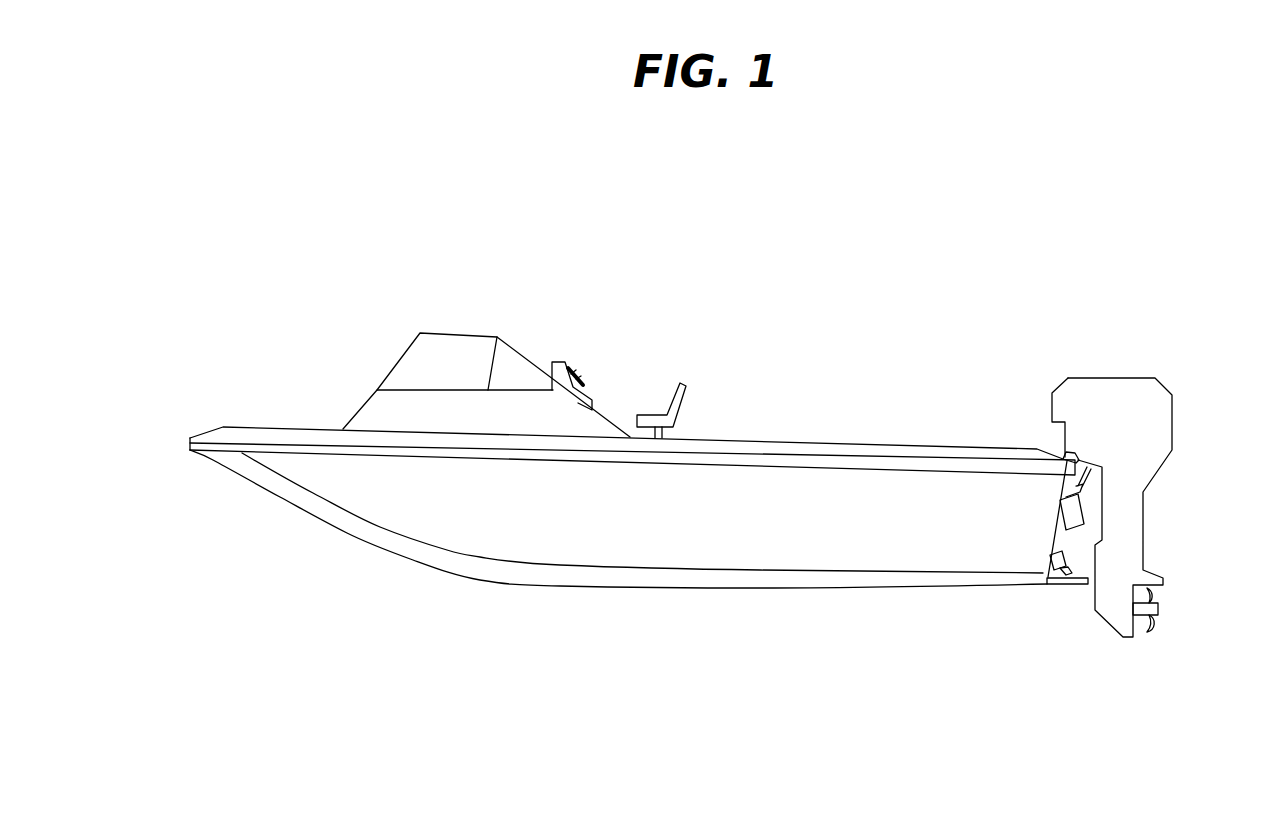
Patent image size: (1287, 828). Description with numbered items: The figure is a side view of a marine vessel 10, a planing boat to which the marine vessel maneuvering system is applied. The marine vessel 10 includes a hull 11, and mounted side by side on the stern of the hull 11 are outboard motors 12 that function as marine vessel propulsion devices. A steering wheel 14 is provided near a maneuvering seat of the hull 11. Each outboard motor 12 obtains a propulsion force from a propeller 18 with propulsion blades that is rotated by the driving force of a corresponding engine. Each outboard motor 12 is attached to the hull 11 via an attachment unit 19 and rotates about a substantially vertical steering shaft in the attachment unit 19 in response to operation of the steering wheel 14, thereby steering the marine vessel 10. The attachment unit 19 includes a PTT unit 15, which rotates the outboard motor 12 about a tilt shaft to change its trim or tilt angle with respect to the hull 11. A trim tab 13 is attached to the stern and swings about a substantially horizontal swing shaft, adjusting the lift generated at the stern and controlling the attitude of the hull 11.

The marine vessel 10 is at (757, 288).
The hull 11 is at (807, 442).
The outboard motor 12 is at (1167, 383).
The trim tab 13 is at (1068, 584).
The steering wheel 14 is at (578, 367).
The PTT unit 15 is at (1087, 500).
The propeller 18 is at (1158, 633).
The attachment unit 19 is at (1060, 455).